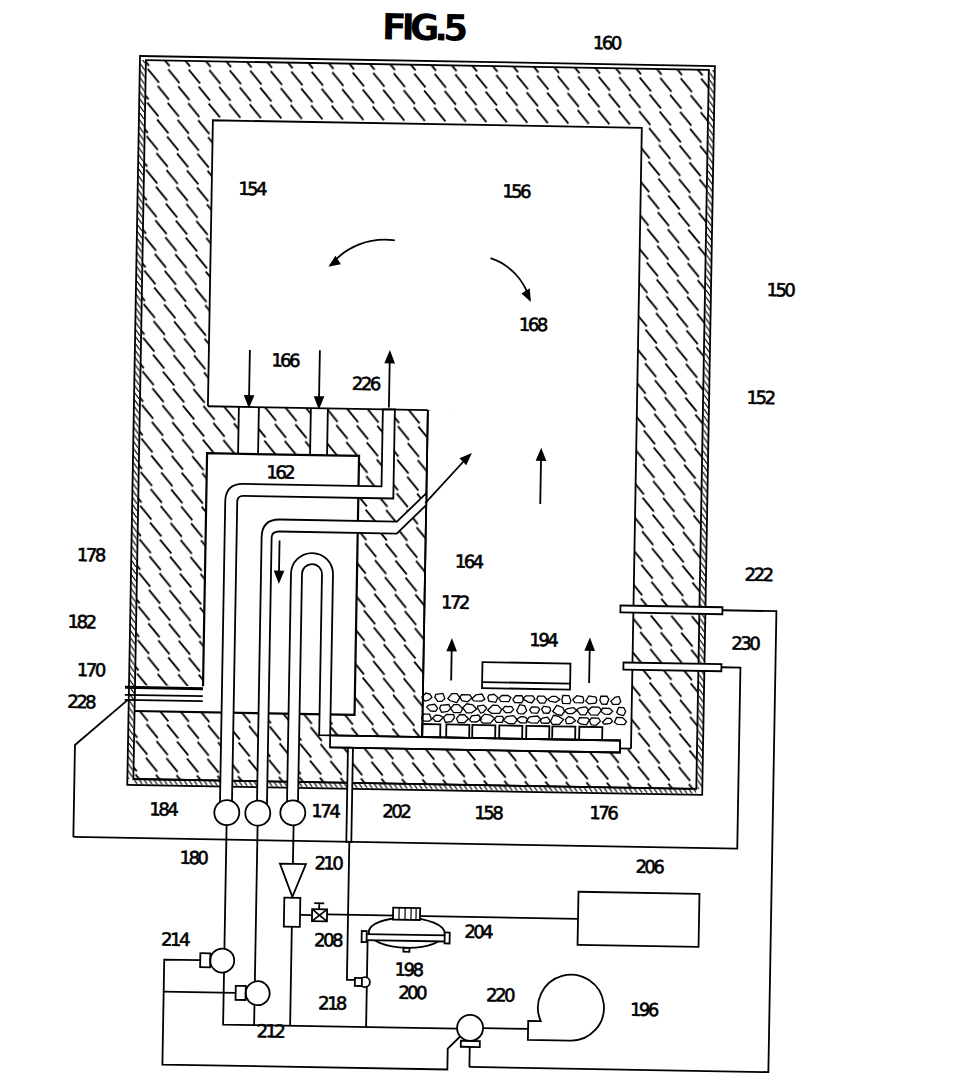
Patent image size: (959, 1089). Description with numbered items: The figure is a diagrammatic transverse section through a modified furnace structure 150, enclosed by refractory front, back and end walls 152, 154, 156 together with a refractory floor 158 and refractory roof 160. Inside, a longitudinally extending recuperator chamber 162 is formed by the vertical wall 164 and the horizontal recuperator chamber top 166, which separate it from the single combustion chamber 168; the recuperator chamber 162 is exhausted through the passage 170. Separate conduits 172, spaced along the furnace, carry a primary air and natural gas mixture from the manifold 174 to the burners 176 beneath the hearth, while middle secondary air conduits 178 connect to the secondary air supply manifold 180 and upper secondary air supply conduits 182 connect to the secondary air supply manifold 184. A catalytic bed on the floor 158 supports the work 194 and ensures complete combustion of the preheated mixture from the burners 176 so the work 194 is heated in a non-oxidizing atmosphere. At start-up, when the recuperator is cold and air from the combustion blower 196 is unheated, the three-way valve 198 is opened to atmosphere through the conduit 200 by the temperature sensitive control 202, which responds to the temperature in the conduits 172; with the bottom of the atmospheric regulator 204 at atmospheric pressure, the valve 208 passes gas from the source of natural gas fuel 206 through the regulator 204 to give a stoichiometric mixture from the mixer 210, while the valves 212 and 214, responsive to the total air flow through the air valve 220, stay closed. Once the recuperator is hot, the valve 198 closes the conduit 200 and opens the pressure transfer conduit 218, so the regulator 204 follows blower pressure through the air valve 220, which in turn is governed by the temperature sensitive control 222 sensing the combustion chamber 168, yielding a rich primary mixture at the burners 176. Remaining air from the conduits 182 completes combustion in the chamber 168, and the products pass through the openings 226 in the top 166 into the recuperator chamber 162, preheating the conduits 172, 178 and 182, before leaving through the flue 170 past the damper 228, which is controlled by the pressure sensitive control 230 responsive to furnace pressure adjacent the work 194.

The furnace structure 150 is at (736, 293).
The front wall 152 is at (712, 398).
The back wall 154 is at (217, 199).
The end walls 156 is at (532, 195).
The floor 158 is at (468, 784).
The roof 160 is at (566, 57).
The recuperator chamber 162 is at (302, 480).
The vertical wall 164 is at (436, 575).
The recuperator chamber top 166 is at (271, 403).
The combustion chamber 168 is at (551, 328).
The passage 170 is at (154, 688).
The conduits 172 is at (345, 625).
The manifold 174 is at (318, 811).
The burners 176 is at (560, 745).
The middle secondary air conduits 178 is at (264, 568).
The secondary air supply manifold 180 is at (263, 823).
The upper secondary air supply conduits 182 is at (232, 627).
The secondary air supply manifold 184 is at (228, 813).
The work 194 is at (519, 656).
The combustion blower 196 is at (622, 997).
The three-way valve 198 is at (386, 976).
The conduit 200 is at (388, 981).
The temperature sensitive control 202 is at (365, 786).
The atmospheric regulator 204 is at (455, 925).
The source of natural gas fuel 206 is at (622, 884).
The valve 208 is at (333, 920).
The mixer 210 is at (312, 875).
The valve 212 is at (270, 1005).
The valve 214 is at (231, 949).
The pressure transfer conduit 218 is at (367, 999).
The air valve 220 is at (489, 1009).
The temperature sensitive control 222 is at (722, 597).
The openings 226 is at (328, 402).
The damper 228 is at (156, 700).
The pressure sensitive control 230 is at (723, 654).